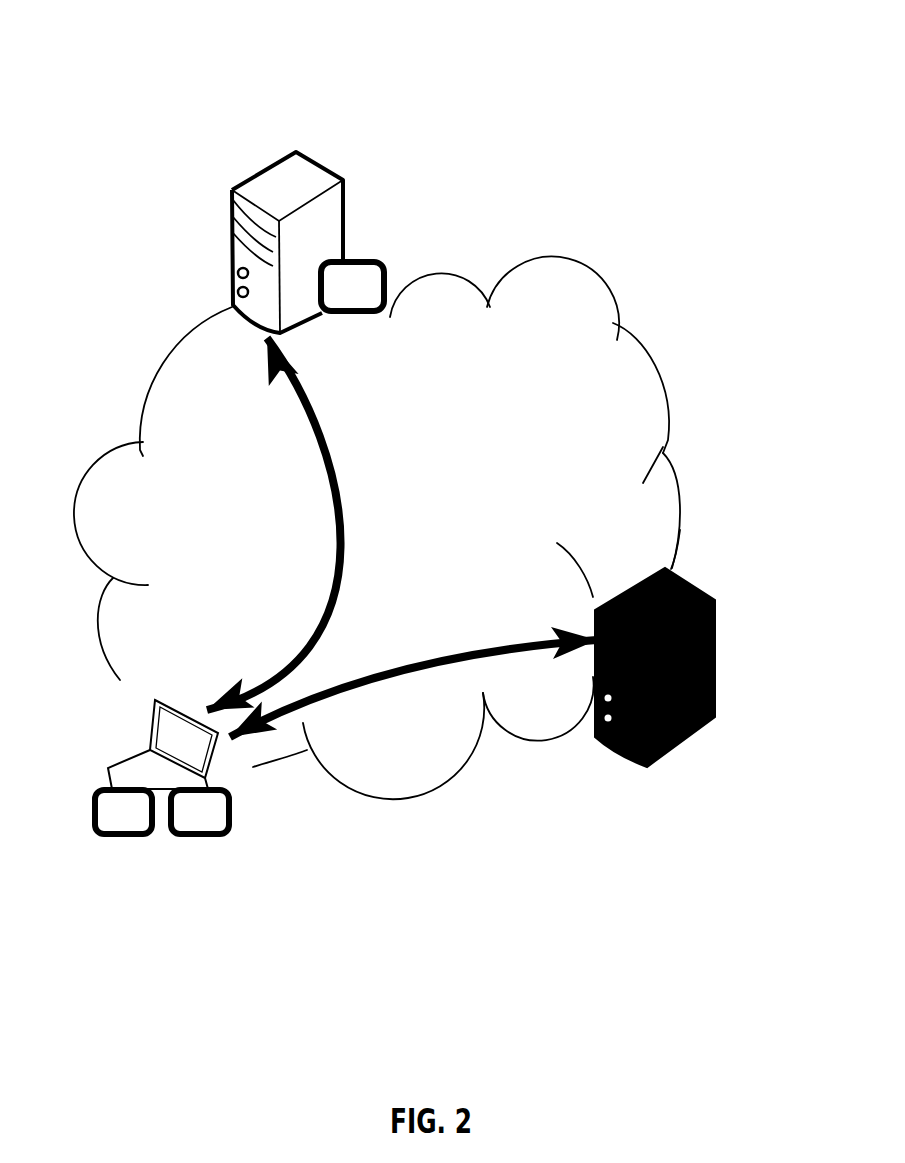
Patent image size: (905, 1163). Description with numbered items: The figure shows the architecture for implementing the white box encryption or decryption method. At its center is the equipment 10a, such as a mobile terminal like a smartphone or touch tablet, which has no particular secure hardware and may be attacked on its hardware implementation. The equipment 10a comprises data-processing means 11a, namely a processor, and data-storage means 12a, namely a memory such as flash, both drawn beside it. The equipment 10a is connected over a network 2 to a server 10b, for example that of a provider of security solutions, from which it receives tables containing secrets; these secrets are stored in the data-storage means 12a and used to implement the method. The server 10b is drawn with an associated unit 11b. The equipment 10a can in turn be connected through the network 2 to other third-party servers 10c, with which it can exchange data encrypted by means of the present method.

The network 2 is at (668, 373).
The equipment 10a is at (144, 736).
The server 10b is at (298, 140).
The third-party servers 10c is at (692, 752).
The data-processing means 11a is at (118, 846).
The storage unit 11b is at (395, 260).
The data-storage means 12a is at (228, 846).